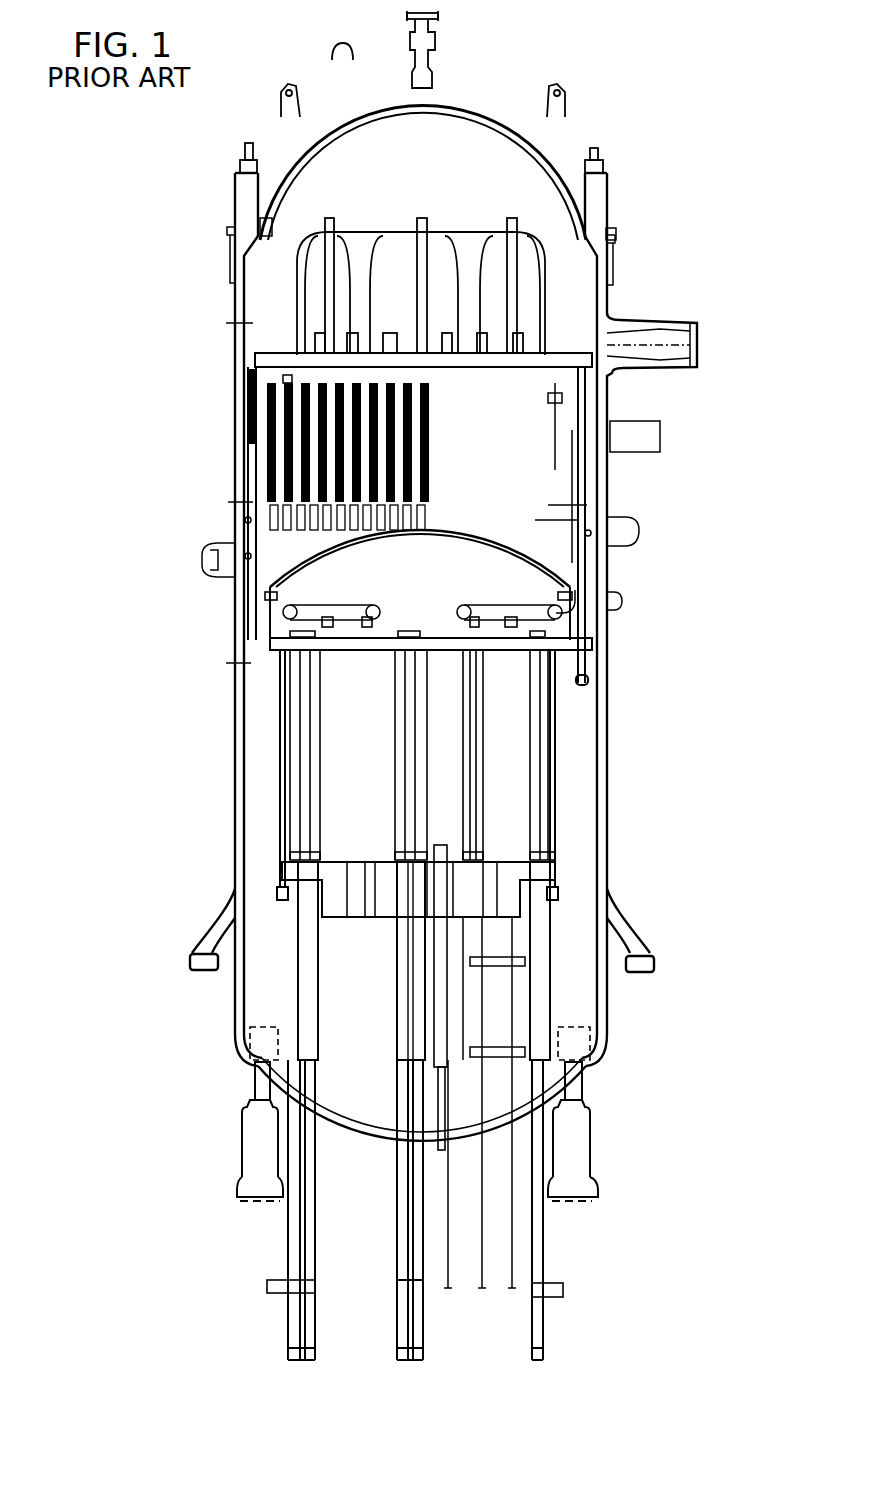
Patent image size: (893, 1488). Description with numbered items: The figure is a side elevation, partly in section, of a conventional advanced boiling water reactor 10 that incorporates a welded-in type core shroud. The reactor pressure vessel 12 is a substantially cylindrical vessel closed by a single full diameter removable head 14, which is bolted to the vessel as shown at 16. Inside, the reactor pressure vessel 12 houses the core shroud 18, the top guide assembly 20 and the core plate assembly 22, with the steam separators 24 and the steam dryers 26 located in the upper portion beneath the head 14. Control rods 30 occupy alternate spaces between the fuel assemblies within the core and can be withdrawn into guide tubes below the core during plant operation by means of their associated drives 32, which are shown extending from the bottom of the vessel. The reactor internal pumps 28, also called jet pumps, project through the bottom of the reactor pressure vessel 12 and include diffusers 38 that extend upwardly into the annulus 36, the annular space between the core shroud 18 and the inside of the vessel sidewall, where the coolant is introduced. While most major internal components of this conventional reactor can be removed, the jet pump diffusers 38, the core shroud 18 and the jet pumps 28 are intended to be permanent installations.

The advanced boiling water reactor 10 is at (695, 95).
The reactor pressure vessel 12 is at (610, 728).
The removable head 14 is at (483, 63).
The bolting 16 is at (245, 157).
The core shroud 18 is at (278, 748).
The top guide assembly 20 is at (235, 653).
The core plate assembly 22 is at (365, 870).
The steam separators 24 is at (270, 415).
The steam dryers 26 is at (297, 297).
The reactor internal pumps 28 is at (253, 1150).
The control rods 30 is at (397, 987).
The control rod drives 32 is at (310, 1268).
The annulus 36 is at (262, 825).
The diffusers 38 is at (237, 1034).